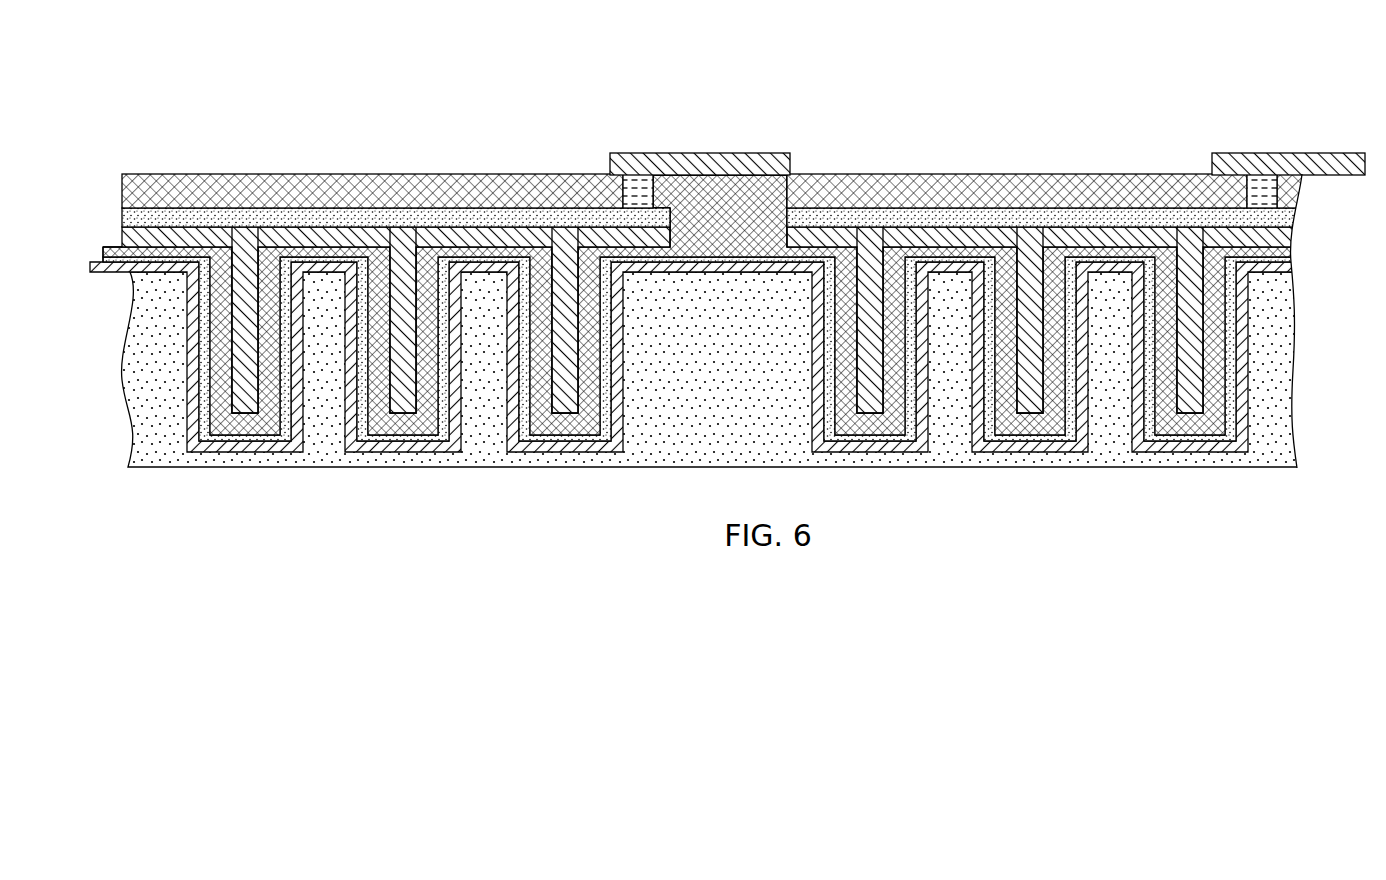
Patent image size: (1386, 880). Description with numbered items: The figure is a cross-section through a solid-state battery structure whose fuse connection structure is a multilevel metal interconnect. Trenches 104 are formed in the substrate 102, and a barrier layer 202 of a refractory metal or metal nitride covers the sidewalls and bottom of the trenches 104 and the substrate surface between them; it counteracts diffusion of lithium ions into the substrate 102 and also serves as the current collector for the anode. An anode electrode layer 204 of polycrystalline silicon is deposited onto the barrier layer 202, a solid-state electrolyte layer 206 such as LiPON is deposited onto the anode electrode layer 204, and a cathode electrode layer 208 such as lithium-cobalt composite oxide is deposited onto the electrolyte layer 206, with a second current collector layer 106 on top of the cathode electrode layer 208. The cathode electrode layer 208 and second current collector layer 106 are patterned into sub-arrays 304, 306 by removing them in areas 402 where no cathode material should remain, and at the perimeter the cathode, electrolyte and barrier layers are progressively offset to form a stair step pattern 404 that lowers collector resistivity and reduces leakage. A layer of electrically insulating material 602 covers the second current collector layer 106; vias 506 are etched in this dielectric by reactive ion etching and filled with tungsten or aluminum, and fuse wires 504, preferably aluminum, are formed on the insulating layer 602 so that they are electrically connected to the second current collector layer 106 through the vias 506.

The substrate 102 is at (134, 385).
The trenches 104 is at (700, 330).
The second current collector layer 106 is at (169, 217).
The barrier layer 202 is at (613, 422).
The anode electrode layer 204 is at (602, 380).
The solid-state electrolyte layer 206 is at (563, 337).
The cathode electrode layer 208 is at (563, 290).
The sub-array 304 is at (1034, 203).
The sub-array 306 is at (393, 199).
The areas where there should be no cathode material 402 is at (738, 229).
The stair step pattern 404 is at (107, 228).
The fuse wires 504 is at (710, 153).
The vias 506 is at (632, 192).
The electrically insulating material 602 is at (252, 188).